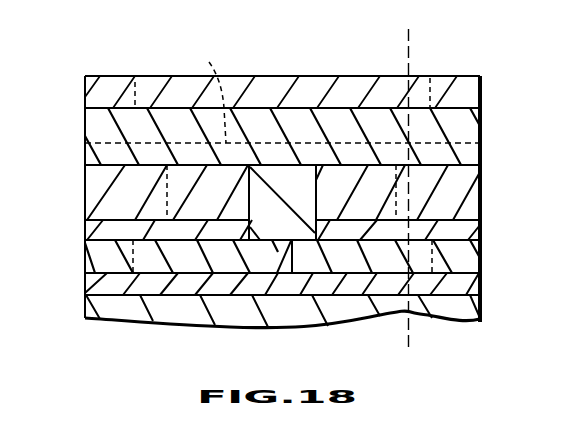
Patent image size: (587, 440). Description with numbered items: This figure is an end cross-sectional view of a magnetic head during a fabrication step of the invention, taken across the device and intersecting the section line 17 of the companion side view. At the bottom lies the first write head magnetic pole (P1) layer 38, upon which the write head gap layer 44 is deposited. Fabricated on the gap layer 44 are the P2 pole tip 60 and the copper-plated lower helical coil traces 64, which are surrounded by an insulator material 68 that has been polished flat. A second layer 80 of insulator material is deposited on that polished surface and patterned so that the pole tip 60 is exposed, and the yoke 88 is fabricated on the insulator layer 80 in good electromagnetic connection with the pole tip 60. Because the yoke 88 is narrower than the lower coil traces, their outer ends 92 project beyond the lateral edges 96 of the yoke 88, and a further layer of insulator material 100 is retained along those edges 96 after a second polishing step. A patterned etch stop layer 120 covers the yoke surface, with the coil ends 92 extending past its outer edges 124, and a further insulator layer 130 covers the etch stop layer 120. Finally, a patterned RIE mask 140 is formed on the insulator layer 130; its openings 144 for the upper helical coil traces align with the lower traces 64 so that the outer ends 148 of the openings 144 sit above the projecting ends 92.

The section line 17 is at (408, 29).
The first write head magnetic pole (P1) layer 38 is at (85, 308).
The write head gap layer 44 is at (85, 290).
The P2 pole tip 60 is at (274, 248).
The lower traces of the helical coil 64 is at (364, 248).
The insulator material 68 is at (85, 252).
The second layer of insulator material 80 is at (85, 226).
The yoke 88 is at (275, 170).
The outer ends of the lower helical coil traces 92 is at (133, 245).
The lateral edges of the yoke 96 is at (166, 200).
The further layer of insulator material 100 is at (85, 180).
The patterned etch stop layer 120 is at (201, 96).
The outer edges of the etch stop layer 124 is at (161, 145).
The further layer of insulator material 130 is at (85, 125).
The patterned RIE mask 140 is at (85, 90).
The opening for upper helical coil traces 144 is at (165, 76).
The outer ends of the openings 148 is at (147, 87).